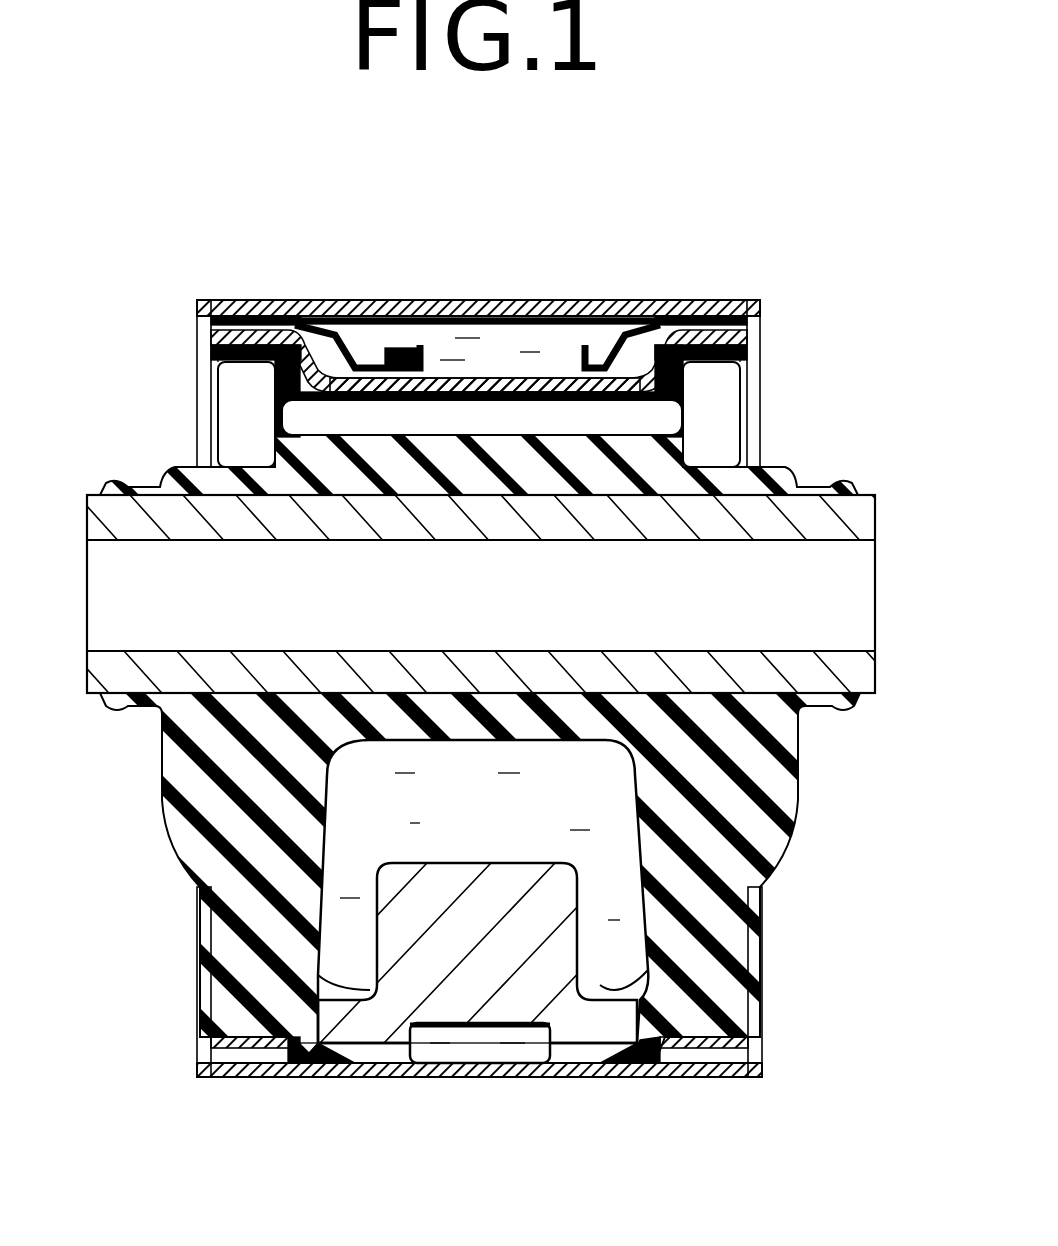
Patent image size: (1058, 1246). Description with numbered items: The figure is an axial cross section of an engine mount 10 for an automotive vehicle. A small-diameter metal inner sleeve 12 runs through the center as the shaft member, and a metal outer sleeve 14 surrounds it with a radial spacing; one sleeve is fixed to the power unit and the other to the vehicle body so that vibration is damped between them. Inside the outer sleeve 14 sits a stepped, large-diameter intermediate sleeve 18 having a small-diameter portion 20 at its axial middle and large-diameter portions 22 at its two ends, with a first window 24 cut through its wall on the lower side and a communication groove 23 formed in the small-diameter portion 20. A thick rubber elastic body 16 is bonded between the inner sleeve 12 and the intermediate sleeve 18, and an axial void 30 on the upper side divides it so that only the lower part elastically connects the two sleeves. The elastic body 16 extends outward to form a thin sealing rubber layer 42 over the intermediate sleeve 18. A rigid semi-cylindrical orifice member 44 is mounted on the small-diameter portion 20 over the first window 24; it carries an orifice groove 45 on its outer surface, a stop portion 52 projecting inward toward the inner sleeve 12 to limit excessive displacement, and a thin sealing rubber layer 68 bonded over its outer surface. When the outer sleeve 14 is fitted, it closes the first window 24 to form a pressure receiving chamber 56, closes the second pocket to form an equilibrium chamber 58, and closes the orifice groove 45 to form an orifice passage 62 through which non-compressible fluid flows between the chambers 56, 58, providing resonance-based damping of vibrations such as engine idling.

The engine mount 10 is at (730, 210).
The inner sleeve 12 is at (852, 519).
The outer sleeve 14 is at (467, 302).
The elastic body 16 is at (213, 762).
The intermediate sleeve 18 is at (255, 1075).
The small-diameter portion 20 is at (546, 378).
The large-diameter portions 22 is at (703, 302).
The communication groove 23 is at (418, 368).
The first window 24 is at (650, 1030).
The axial void 30 is at (658, 422).
The sealing rubber layer 42 is at (263, 302).
The orifice member 44 is at (505, 1088).
The orifice groove 45 is at (420, 1077).
The stop portion 52 is at (467, 942).
The pressure receiving chamber 56 is at (571, 798).
The equilibrium chamber 58 is at (503, 340).
The orifice passage 62 is at (474, 1048).
The sealing rubber layer 68 is at (627, 1057).